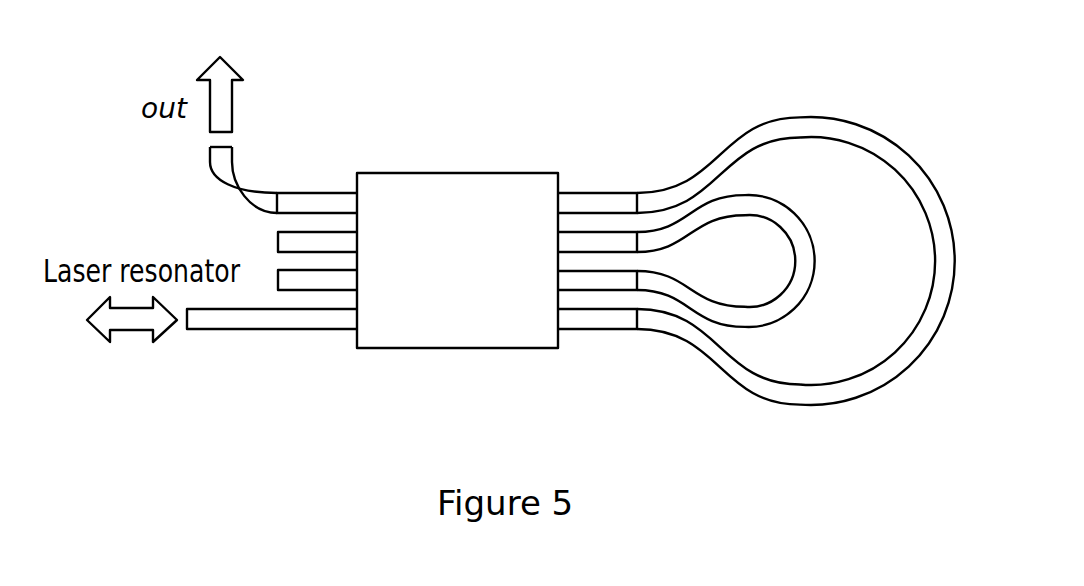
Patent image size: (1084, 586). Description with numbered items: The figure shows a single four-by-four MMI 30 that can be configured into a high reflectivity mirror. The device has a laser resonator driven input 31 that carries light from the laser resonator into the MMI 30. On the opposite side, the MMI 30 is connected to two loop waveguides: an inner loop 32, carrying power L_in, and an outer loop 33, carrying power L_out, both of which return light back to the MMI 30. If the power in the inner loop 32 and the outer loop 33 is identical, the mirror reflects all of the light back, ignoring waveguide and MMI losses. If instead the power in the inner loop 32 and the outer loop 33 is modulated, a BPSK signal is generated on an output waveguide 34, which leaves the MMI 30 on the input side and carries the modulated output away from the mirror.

The 4×4 MMI 30 is at (432, 173).
The laser resonator driven input 31 is at (237, 325).
The inner loop 32 is at (800, 237).
The outer loop 33 is at (872, 139).
The output waveguide 34 is at (210, 166).